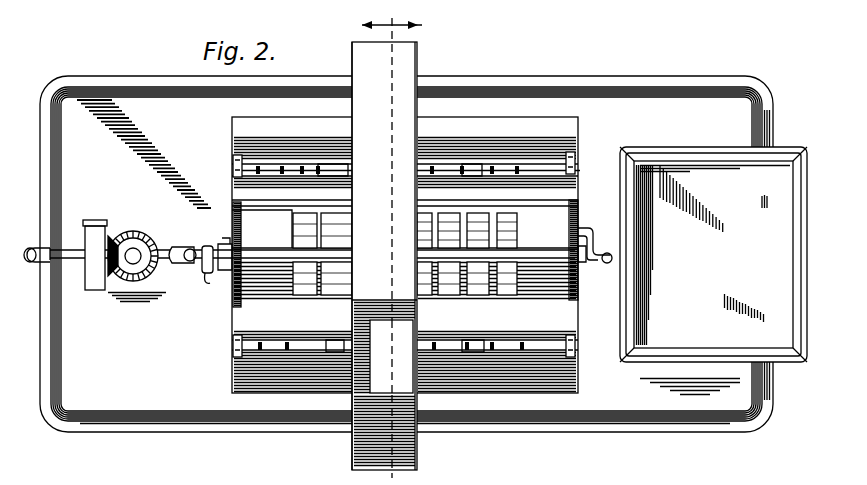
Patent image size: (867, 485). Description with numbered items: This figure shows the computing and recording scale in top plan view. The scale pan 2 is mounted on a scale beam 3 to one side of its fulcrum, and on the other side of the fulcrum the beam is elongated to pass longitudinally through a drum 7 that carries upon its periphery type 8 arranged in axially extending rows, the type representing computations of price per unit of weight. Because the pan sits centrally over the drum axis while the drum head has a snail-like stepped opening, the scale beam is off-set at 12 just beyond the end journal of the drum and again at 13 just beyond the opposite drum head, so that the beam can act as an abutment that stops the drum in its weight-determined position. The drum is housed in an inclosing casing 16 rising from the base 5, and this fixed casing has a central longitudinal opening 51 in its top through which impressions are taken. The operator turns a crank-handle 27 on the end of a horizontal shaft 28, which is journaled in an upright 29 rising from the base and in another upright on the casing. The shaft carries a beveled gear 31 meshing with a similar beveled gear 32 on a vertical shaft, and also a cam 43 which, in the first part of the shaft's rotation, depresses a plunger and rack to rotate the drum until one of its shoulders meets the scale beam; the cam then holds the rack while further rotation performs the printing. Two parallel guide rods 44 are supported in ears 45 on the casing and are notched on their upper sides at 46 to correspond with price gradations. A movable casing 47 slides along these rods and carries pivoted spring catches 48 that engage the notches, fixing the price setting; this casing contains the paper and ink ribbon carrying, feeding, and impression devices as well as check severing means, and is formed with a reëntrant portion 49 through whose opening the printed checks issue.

The scale pan 2 is at (713, 254).
The scale beam 3 is at (653, 278).
The base 5 is at (706, 432).
The drum 7 is at (405, 193).
The type 8 is at (330, 247).
The off-set of scale beam 12 is at (596, 230).
The off-set of scale beam 13 is at (228, 240).
The inclosing casing 16 is at (262, 362).
The crank-handle 27 is at (42, 244).
The horizontal shaft 28 is at (162, 248).
The upright 29 is at (95, 290).
The beveled gear 31 is at (115, 238).
The beveled gear 32 is at (135, 282).
The cam 43 is at (206, 280).
The guide rods 44 is at (538, 158).
The ears 45 is at (232, 158).
The notches 46 is at (492, 168).
The casing 47 is at (384, 383).
The spring catches 48 is at (354, 170).
The reëntrant portion 49 is at (398, 380).
The central longitudinal opening 51 is at (272, 212).